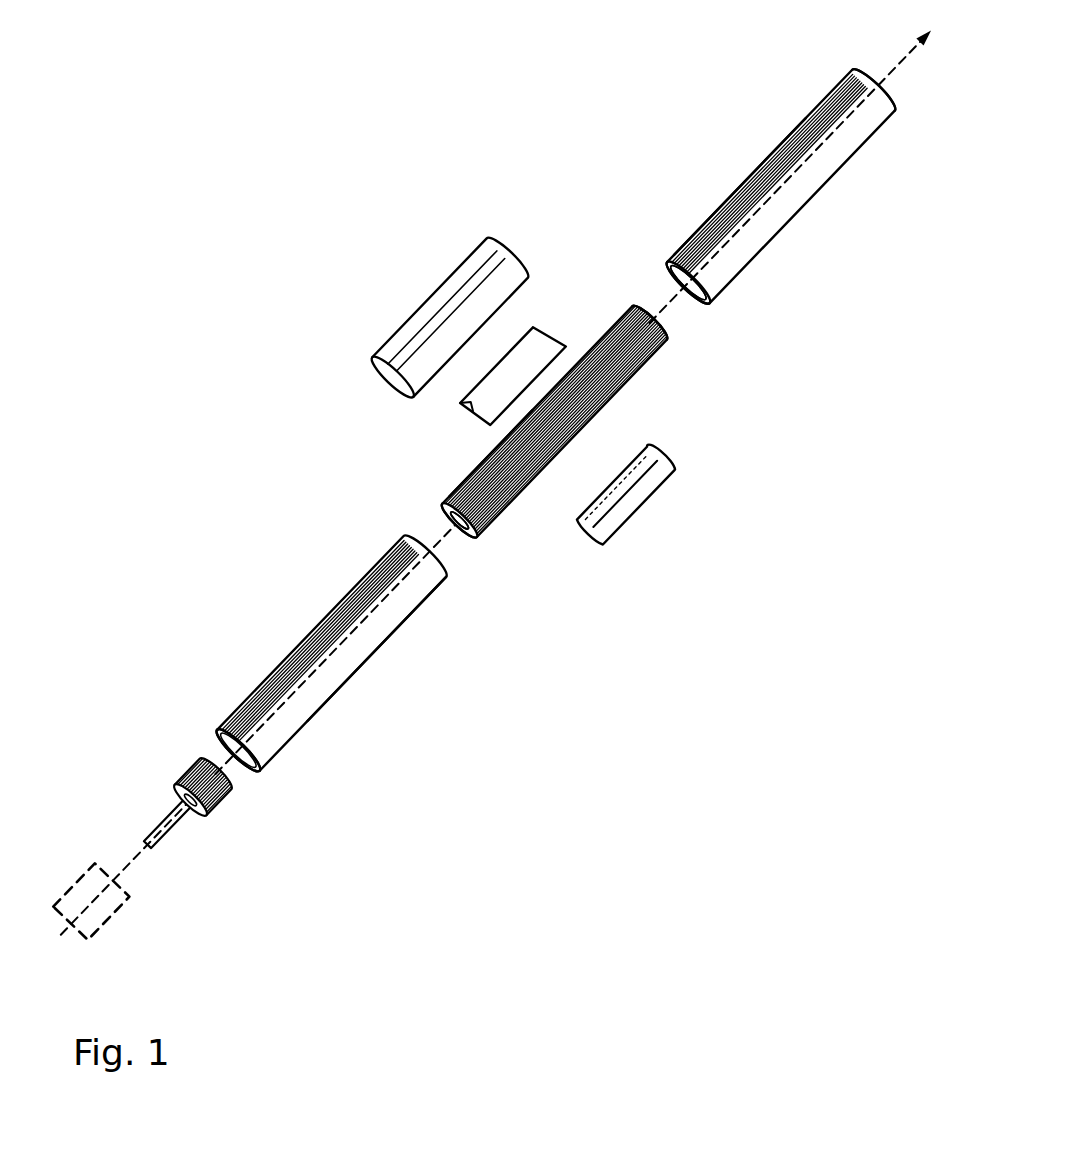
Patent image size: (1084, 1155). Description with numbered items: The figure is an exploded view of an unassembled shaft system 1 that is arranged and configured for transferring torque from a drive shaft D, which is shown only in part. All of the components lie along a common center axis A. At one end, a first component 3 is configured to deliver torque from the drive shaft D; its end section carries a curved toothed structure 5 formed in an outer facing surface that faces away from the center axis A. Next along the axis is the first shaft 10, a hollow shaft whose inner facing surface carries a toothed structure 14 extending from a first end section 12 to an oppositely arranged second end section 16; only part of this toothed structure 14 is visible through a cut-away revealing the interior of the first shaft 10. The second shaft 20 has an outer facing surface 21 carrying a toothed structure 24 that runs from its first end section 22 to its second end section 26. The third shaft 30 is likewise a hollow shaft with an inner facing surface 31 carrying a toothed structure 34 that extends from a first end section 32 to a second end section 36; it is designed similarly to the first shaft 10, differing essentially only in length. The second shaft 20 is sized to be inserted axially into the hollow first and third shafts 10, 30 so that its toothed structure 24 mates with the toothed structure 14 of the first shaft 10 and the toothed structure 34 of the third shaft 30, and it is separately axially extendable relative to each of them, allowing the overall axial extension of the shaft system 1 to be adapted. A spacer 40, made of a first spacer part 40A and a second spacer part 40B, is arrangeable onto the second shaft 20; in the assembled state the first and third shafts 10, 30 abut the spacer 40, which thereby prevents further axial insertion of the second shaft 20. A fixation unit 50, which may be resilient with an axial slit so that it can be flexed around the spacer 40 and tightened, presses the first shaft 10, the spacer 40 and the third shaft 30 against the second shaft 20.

The shaft system 1 is at (188, 366).
The first component 3 is at (183, 820).
The curved toothed structure 5 is at (185, 768).
The first shaft 10 is at (296, 645).
The first end section 12 is at (262, 786).
The toothed structure 14 is at (241, 731).
The second end section 16 is at (447, 615).
The second shaft 20 is at (607, 407).
The outer facing surface 21 is at (478, 462).
The first end section 22 is at (487, 550).
The toothed structure 24 is at (445, 493).
The second end section 26 is at (688, 351).
The third shaft 30 is at (830, 177).
The inner facing surface 31 is at (668, 270).
The first end section 32 is at (741, 297).
The toothed structure 34 is at (747, 192).
The second end section 36 is at (803, 83).
The spacer 40 is at (638, 473).
The first spacer part 40A is at (670, 470).
The second spacer part 40B is at (565, 349).
The fixation unit 50 is at (400, 323).
The center axis A is at (127, 870).
The drive shaft D is at (110, 915).